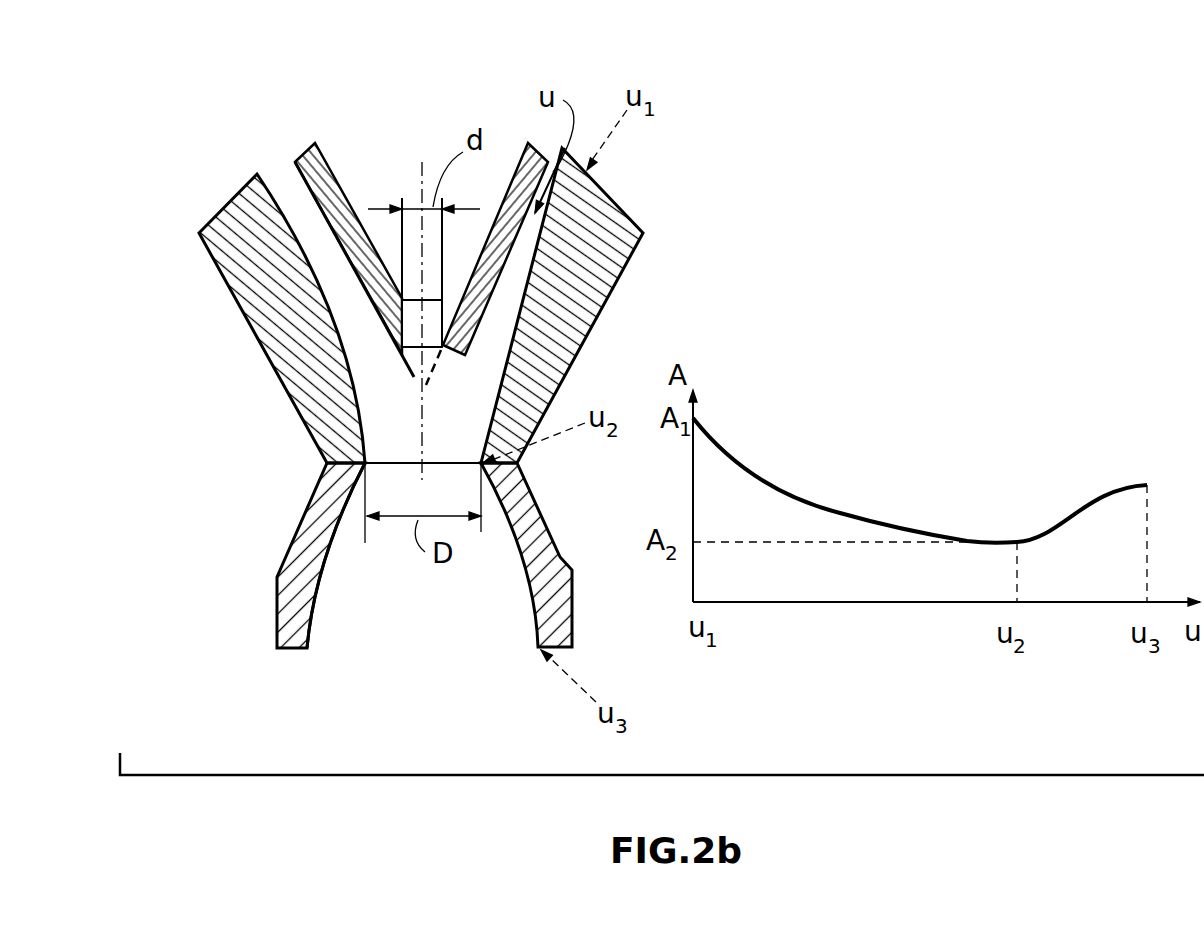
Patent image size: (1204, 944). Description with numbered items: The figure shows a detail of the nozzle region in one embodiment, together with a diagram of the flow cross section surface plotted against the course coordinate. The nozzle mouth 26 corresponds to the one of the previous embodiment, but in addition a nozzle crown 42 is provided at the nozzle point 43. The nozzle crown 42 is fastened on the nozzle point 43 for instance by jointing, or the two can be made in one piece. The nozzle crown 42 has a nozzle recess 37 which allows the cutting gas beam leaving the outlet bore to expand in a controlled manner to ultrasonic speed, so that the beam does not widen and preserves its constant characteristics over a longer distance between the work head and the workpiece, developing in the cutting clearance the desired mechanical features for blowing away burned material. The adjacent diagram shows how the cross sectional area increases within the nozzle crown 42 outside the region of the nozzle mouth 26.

The nozzle mouth 26 is at (380, 427).
The nozzle recess 37 is at (313, 603).
The nozzle crown 42 is at (293, 562).
The nozzle point 43 is at (300, 377).